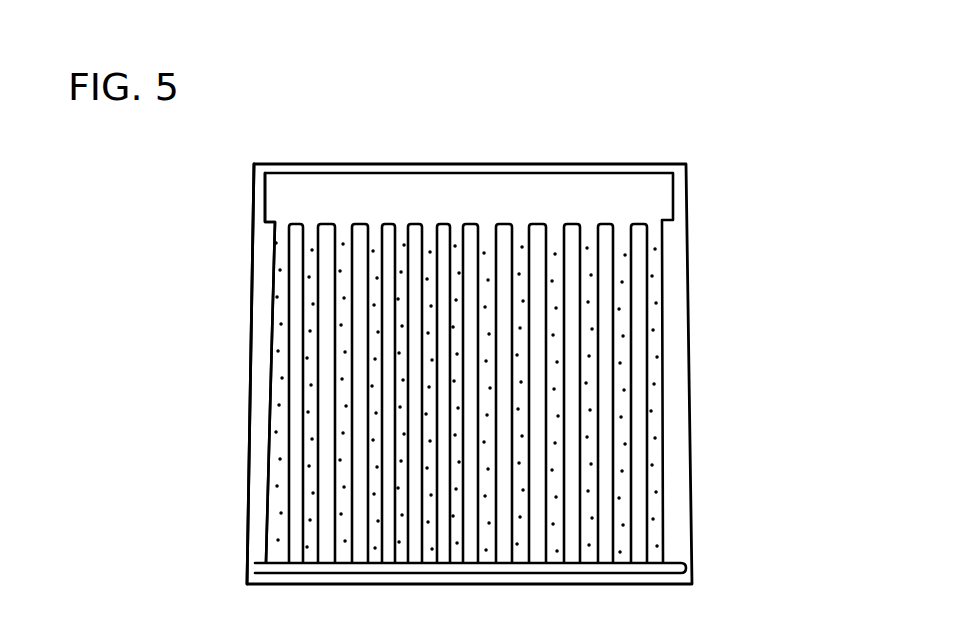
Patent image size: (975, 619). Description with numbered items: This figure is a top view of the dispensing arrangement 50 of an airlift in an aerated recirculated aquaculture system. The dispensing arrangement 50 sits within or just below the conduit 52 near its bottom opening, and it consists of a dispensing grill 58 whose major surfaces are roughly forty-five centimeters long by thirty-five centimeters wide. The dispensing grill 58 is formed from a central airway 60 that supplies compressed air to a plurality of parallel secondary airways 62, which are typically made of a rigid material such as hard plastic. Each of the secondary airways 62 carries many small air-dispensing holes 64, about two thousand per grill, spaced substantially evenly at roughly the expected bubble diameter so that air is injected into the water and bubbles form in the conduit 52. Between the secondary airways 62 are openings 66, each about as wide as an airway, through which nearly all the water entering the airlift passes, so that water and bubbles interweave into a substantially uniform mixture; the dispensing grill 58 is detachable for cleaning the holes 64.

The dispensing arrangement 50 is at (675, 197).
The conduit 52 is at (251, 375).
The dispensing grill 58 is at (275, 256).
The central airway 60 is at (440, 183).
The secondary airways 62 is at (658, 407).
The air-dispensing holes 64 is at (660, 483).
The openings 66 is at (297, 492).